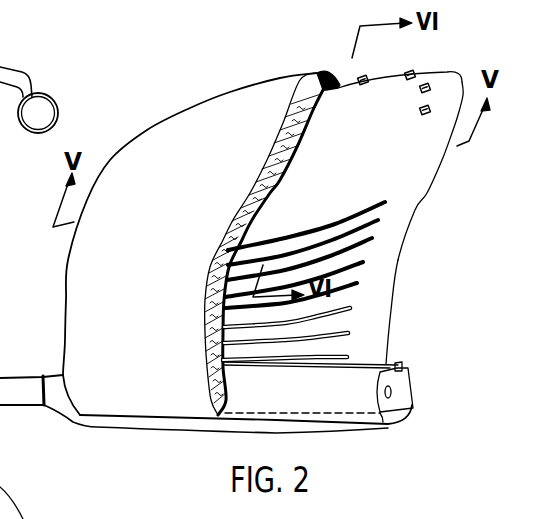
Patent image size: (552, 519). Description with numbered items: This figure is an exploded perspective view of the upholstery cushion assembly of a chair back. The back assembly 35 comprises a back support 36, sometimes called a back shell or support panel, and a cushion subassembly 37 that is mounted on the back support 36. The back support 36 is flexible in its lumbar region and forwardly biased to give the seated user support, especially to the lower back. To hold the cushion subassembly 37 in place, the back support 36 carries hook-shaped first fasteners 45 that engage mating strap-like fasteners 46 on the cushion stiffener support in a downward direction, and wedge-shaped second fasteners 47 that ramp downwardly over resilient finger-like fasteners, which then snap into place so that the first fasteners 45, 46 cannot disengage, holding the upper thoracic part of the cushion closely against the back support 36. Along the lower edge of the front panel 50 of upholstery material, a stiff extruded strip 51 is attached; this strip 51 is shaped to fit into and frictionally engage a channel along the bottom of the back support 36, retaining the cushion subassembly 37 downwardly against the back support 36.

The back assembly 35 is at (413, 267).
The back support 36 is at (392, 338).
The cushion subassembly 37 is at (91, 290).
The hook-shaped first fasteners 45 is at (424, 83).
The strap-like fasteners 46 is at (328, 78).
The wedge-shaped second fasteners 47 is at (328, 172).
The front panel 50 is at (133, 390).
The stiff extruded strip 51 is at (328, 430).